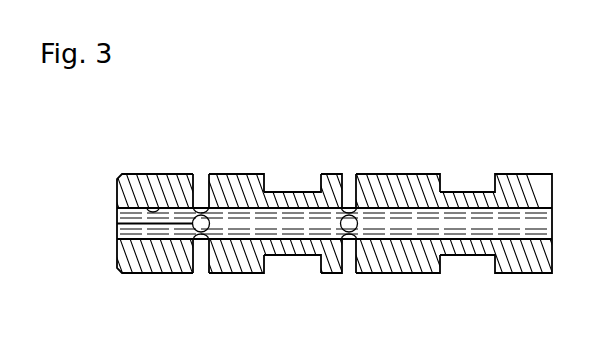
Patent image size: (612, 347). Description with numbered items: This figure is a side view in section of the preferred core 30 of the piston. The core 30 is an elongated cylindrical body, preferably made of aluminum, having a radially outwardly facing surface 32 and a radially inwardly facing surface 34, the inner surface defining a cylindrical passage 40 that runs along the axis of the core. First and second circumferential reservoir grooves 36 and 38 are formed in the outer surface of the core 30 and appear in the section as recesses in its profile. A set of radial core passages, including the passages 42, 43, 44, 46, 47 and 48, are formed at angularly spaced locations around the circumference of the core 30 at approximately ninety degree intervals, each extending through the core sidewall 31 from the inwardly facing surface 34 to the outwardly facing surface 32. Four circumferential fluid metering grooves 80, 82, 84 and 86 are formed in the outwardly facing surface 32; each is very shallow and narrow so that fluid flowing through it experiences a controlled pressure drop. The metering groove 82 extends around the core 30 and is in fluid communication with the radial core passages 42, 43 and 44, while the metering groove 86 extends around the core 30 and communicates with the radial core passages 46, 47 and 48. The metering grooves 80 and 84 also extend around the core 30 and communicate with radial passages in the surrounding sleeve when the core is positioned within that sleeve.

The core 30 is at (112, 288).
The core sidewall 31 is at (118, 183).
The radially outwardly facing surface 32 is at (222, 275).
The radially inwardly facing surface 34 is at (152, 206).
The first circumferential reservoir groove 36 is at (297, 257).
The second circumferential reservoir groove 38 is at (466, 192).
The cylindrical passage 40 is at (334, 224).
The radial core passage 42 is at (201, 268).
The radial core passage 43 is at (118, 223).
The radial core passage 44 is at (215, 173).
The radial core passage 46 is at (348, 260).
The radial core passage 47 is at (343, 217).
The radial core passage 48 is at (342, 174).
The circumferential fluid metering groove 80 is at (395, 174).
The circumferential fluid metering groove 82 is at (349, 174).
The circumferential fluid metering groove 84 is at (237, 173).
The circumferential fluid metering groove 86 is at (200, 172).